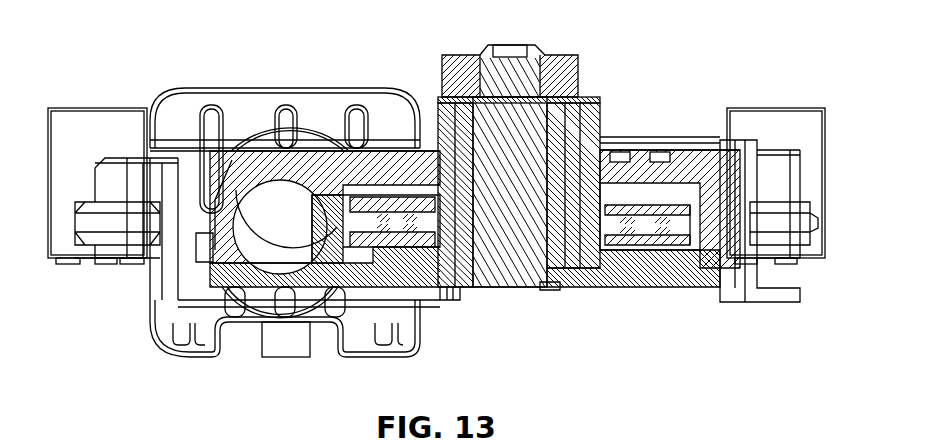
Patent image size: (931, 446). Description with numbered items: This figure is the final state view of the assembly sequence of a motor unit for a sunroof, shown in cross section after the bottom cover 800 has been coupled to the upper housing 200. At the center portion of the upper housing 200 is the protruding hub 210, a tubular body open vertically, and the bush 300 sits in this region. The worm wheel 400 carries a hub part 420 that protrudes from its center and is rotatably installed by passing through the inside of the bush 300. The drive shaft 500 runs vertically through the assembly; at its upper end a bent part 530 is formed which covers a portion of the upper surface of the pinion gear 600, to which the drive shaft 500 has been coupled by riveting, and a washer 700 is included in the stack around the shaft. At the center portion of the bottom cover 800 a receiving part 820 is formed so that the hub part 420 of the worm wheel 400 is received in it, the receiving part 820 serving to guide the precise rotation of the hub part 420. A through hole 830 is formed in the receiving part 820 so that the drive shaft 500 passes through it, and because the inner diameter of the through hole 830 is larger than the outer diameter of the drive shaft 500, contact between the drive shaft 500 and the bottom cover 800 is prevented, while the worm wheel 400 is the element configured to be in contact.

The upper housing 200 is at (660, 140).
The protruding hub 210 is at (600, 137).
The bush 300 is at (437, 100).
The worm wheel 400 is at (685, 256).
The hub part 420 is at (565, 125).
The drive shaft 500 is at (505, 284).
The bent part 530 is at (492, 56).
The pinion gear 600 is at (524, 50).
The washer 700 is at (580, 96).
The bottom cover 800 is at (625, 290).
The receiving part 820 is at (448, 300).
The through hole 830 is at (545, 291).